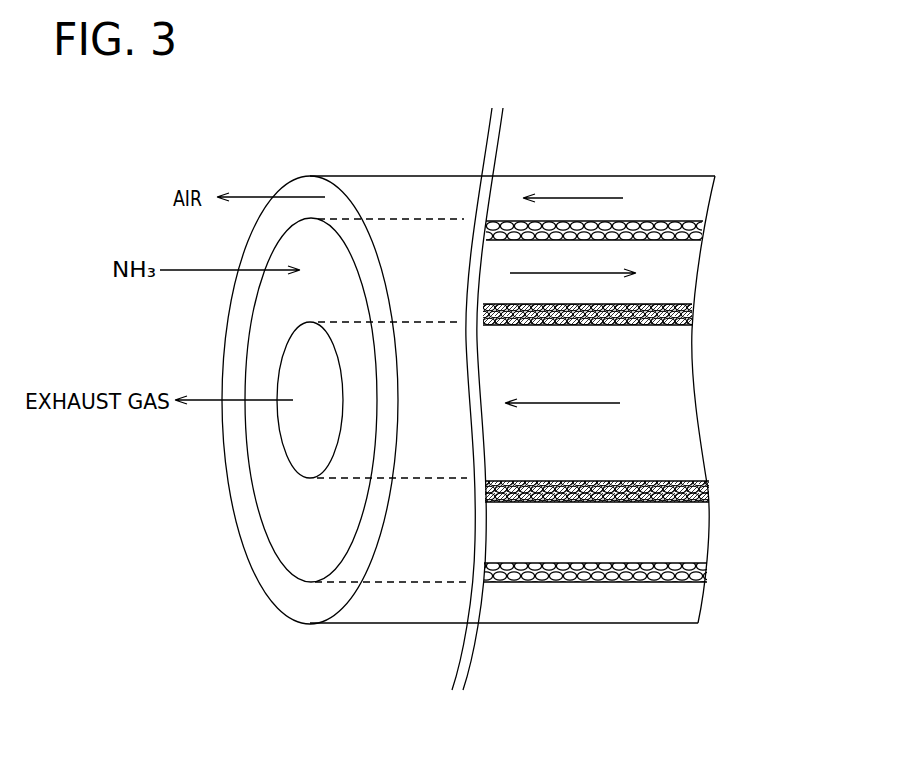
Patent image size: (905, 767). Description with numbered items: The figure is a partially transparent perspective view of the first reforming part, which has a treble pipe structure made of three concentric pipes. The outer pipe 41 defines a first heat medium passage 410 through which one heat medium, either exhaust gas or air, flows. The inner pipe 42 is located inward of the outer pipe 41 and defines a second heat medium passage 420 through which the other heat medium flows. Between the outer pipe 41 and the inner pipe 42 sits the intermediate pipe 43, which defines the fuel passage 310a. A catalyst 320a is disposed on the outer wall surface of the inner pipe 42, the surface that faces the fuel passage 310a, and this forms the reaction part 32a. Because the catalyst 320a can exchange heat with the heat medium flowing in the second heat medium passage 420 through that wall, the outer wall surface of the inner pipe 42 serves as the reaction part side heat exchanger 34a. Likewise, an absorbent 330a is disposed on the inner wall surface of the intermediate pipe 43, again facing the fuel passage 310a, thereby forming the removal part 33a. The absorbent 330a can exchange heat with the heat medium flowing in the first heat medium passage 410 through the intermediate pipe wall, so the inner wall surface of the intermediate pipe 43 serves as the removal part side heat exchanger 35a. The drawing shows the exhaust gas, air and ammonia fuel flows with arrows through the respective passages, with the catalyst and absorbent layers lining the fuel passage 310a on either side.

The outer pipe 41 is at (402, 196).
The inner pipe 42 is at (308, 478).
The intermediate pipe 43 is at (303, 582).
The first heat medium passage 410 is at (690, 202).
The second heat medium passage 420 is at (658, 405).
The fuel passage 310a is at (556, 258).
The reaction part 32a is at (703, 321).
The catalyst 320a is at (660, 305).
The removal part 33a is at (717, 237).
The absorbent 330a is at (690, 240).
The reaction part side heat exchanger 34a is at (650, 325).
The removal part side heat exchanger 35a is at (635, 221).